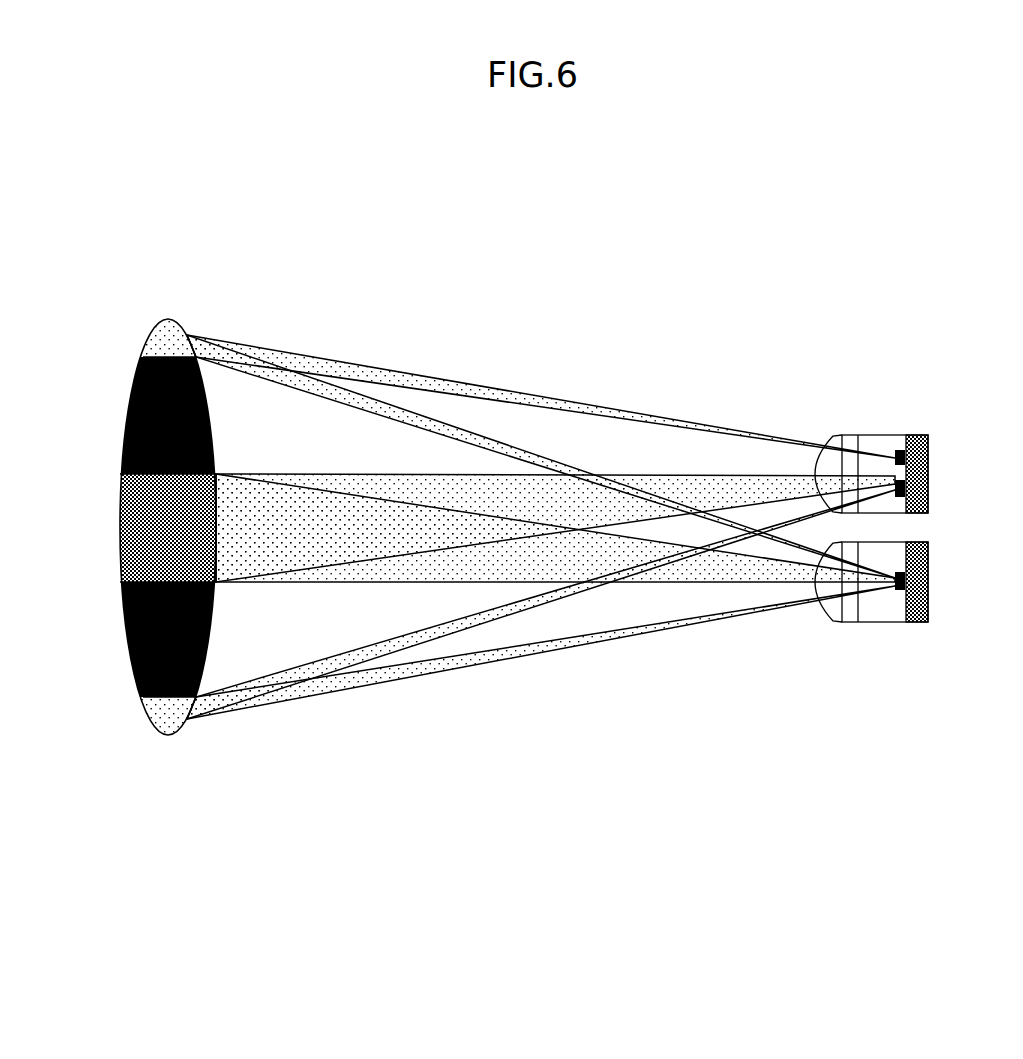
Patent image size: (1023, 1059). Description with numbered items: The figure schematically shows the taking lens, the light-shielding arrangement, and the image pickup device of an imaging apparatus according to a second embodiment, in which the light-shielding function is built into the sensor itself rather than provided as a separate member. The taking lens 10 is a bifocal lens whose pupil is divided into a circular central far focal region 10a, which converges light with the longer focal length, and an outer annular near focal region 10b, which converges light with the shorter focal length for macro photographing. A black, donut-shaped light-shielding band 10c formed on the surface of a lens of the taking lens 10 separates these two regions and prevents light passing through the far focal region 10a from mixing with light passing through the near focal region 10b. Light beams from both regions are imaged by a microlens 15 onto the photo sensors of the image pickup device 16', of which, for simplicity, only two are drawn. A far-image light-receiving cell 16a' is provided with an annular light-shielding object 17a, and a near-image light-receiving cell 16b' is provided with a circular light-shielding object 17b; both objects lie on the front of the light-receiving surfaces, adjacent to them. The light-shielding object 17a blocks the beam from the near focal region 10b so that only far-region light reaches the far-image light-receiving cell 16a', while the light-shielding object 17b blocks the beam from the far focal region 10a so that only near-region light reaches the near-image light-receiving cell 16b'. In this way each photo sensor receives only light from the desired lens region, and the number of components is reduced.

The taking lens 10 is at (146, 507).
The far focal region 10a is at (122, 528).
The near focal region 10b is at (148, 343).
The light-shielding band 10c is at (128, 415).
The microlens 15 is at (828, 438).
The image pickup device 16' is at (895, 495).
The far-image light-receiving cell 16a' is at (953, 474).
The near-image light-receiving cell 16b' is at (953, 582).
The light-shielding object 17a is at (896, 486).
The light-shielding object 17b is at (898, 589).